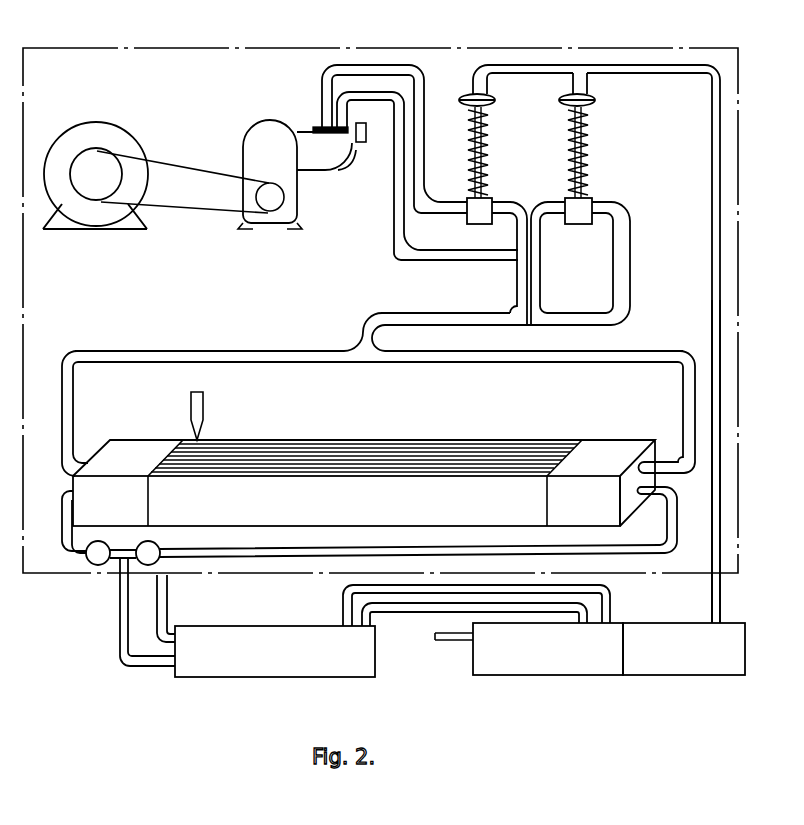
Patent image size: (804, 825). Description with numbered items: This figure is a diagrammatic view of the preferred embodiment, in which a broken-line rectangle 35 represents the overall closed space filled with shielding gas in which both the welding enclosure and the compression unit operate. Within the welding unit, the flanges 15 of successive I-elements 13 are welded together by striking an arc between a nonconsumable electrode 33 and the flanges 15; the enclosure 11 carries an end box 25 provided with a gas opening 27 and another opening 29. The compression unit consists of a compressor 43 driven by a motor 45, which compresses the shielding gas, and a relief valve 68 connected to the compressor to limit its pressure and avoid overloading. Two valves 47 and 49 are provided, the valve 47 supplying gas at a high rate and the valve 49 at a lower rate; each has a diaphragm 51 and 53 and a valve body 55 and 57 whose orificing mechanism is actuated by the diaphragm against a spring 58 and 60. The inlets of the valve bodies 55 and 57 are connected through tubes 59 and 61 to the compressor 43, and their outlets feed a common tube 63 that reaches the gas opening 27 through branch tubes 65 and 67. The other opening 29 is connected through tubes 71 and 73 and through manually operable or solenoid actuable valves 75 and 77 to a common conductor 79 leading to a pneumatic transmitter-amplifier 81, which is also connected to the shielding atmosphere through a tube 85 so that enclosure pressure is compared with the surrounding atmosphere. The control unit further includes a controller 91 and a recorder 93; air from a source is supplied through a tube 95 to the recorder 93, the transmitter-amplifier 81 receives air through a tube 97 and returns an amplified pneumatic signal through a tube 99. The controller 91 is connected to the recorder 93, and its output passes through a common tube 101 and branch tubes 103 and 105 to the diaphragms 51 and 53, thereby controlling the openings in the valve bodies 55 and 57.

The enclosure 11 is at (373, 464).
The I-element 13 is at (373, 476).
The flange 15 is at (250, 440).
The box 25 is at (603, 514).
The gas opening 27 is at (658, 467).
The opening 29 is at (675, 516).
The nonconsumable electrode 33 is at (210, 415).
The broken-line rectangle 35 is at (242, 48).
The compressor 43 is at (267, 121).
The motor 45 is at (92, 121).
The valve 47 is at (589, 150).
The valve 49 is at (476, 150).
The diaphragm 51 is at (592, 94).
The diaphragm 53 is at (464, 95).
The valve body 55 is at (592, 197).
The valve body 57 is at (488, 197).
The spring 58 is at (585, 142).
The tube 59 is at (393, 194).
The spring 60 is at (487, 162).
The tube 61 is at (424, 165).
The common tube 63 is at (478, 300).
The branch tube 65 is at (518, 362).
The branch tube 67 is at (283, 351).
The relief valve 68 is at (367, 134).
The tube 71 is at (62, 515).
The tube 73 is at (227, 554).
The valve 75 is at (87, 559).
The valve 77 is at (158, 548).
The common conductor 79 is at (120, 655).
The transmitter-amplifier 81 is at (252, 678).
The tube 85 is at (160, 614).
The controller 91 is at (664, 676).
The recorder 93 is at (546, 676).
The tube 95 is at (461, 641).
The tube 97 is at (620, 600).
The tube 99 is at (420, 613).
The common tube 101 is at (712, 142).
The branch tube 103 is at (569, 78).
The branch tube 105 is at (500, 69).